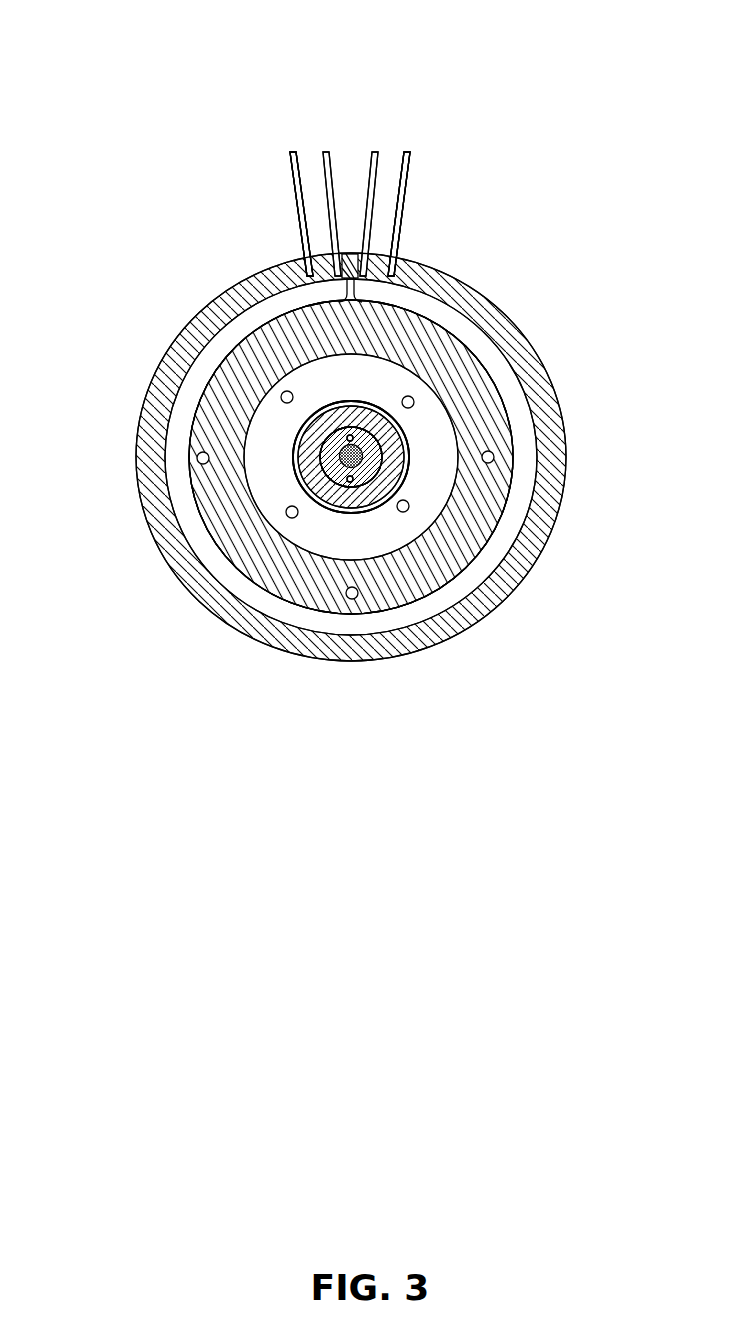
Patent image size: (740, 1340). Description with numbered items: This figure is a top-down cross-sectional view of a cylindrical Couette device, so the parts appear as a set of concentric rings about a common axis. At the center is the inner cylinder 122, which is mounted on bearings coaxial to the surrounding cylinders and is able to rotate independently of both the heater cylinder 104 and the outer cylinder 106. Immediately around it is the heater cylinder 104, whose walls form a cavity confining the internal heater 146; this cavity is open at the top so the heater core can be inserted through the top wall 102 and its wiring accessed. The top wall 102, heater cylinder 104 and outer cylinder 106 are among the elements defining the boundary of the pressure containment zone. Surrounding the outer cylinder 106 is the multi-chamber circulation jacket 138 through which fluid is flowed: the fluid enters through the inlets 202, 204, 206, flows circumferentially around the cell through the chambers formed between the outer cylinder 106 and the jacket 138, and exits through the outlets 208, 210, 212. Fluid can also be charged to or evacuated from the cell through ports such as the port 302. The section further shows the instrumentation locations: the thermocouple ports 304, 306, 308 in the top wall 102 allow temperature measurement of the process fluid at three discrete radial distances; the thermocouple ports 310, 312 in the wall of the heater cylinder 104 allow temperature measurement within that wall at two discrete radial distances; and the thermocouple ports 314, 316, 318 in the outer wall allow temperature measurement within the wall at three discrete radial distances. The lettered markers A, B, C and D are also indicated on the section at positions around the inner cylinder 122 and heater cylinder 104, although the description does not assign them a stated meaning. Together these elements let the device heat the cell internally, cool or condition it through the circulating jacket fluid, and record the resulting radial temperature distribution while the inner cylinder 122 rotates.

The top wall 102 is at (306, 524).
The heater cylinder 104 is at (288, 367).
The outer cylinder 106 is at (405, 455).
The inner cylinder 122 is at (409, 359).
The circulation jacket 138 is at (375, 473).
The internal heater 146 is at (442, 470).
The inlet 202 is at (451, 165).
The inlet 204 is at (437, 179).
The inlet 206 is at (451, 193).
The outlet 208 is at (247, 139).
The outlet 210 is at (261, 153).
The outlet 212 is at (247, 168).
The port 302 is at (497, 640).
The thermocouple port 304 is at (159, 574).
The thermocouple port 306 is at (160, 318).
The thermocouple port 308 is at (514, 318).
The thermocouple port 310 is at (443, 658).
The thermocouple port 312 is at (265, 282).
The thermocouple port 314 is at (577, 467).
The thermocouple port 316 is at (294, 669).
The thermocouple port 318 is at (119, 423).
The point A is at (479, 430).
The point B is at (492, 478).
The point C is at (253, 481).
The point D is at (303, 457).